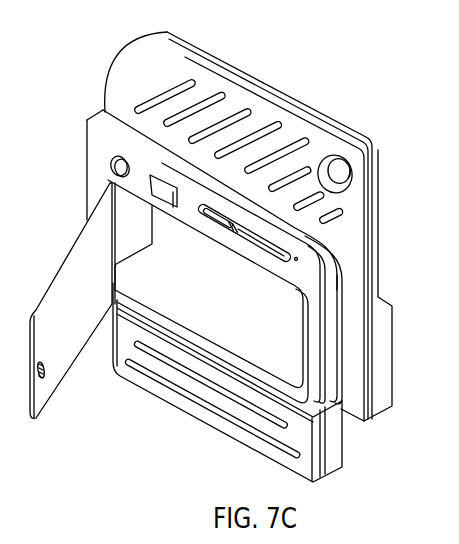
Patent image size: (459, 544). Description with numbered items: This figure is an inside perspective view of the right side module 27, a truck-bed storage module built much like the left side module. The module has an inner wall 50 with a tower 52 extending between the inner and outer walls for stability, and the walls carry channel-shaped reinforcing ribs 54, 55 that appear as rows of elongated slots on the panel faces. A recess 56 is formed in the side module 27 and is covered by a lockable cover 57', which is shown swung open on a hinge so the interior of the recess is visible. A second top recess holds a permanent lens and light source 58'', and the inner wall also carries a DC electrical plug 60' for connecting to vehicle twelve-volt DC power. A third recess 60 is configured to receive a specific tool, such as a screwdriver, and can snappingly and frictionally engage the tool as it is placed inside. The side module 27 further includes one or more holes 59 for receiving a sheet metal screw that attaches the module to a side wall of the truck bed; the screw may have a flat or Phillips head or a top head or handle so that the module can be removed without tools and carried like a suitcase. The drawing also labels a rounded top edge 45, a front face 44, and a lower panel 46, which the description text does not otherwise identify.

The right side module 27 is at (390, 130).
The rounded top edge 45 is at (103, 114).
The front face 44 is at (98, 145).
The DC electrical plug 60' is at (88, 163).
The permanent lens and light source 58'' is at (198, 110).
The channel-shaped reinforcing ribs 54 is at (262, 128).
The tower 52 is at (331, 157).
The holes 59 is at (328, 173).
The third recess 60 is at (216, 283).
The recess 56 is at (283, 309).
The inner wall 50 is at (352, 274).
The lower panel 46 is at (110, 369).
The channel-shaped reinforcing ribs 55 is at (182, 394).
The lockable cover 57' is at (67, 300).